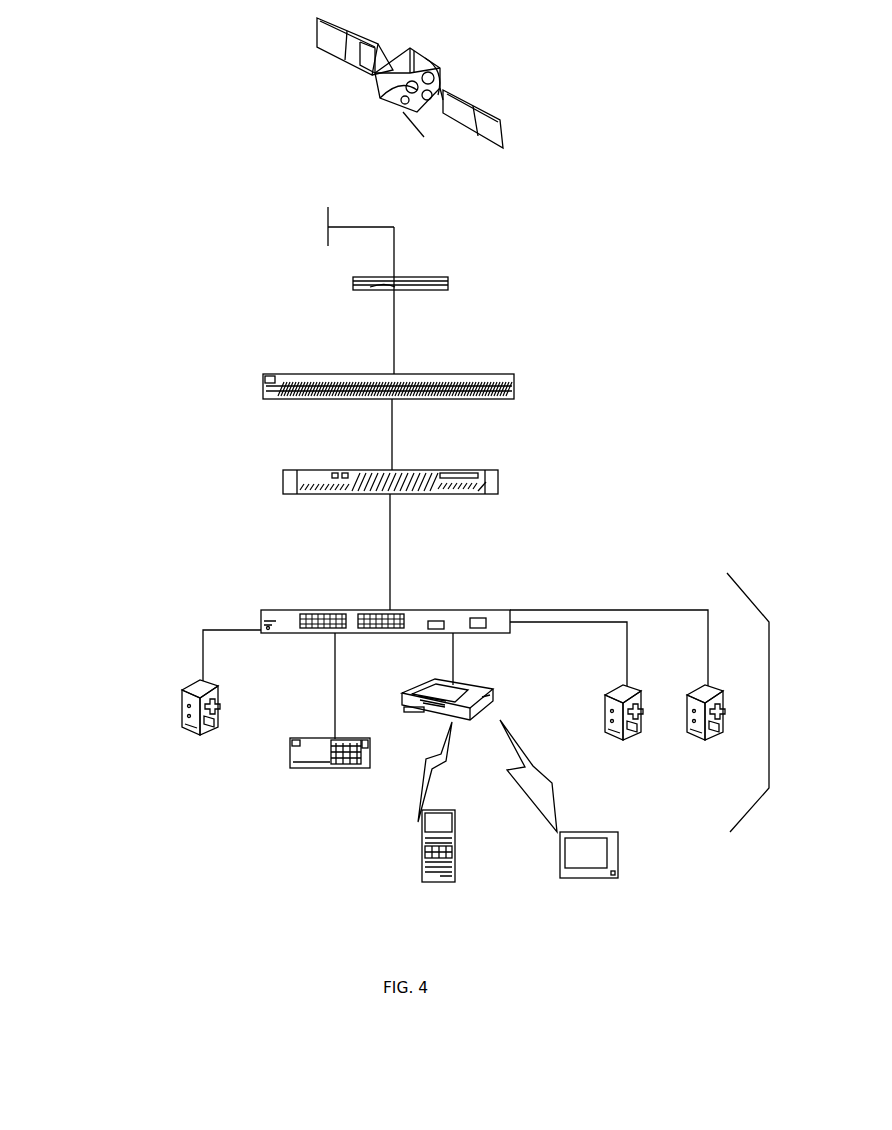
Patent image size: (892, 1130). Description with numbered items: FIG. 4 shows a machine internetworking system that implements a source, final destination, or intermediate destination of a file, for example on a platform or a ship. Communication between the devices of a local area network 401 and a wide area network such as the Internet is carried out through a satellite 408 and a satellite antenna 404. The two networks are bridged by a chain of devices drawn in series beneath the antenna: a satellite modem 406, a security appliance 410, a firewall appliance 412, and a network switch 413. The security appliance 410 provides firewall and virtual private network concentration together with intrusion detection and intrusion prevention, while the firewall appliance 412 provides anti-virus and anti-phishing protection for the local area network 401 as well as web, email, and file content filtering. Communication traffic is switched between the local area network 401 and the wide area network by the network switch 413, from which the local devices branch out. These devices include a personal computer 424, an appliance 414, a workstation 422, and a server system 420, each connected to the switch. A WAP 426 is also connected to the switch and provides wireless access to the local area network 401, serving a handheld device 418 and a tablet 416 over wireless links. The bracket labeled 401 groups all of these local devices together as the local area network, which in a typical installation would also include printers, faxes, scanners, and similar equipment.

The satellite 408 is at (412, 100).
The satellite antenna 404 is at (271, 226).
The satellite modem 406 is at (301, 284).
The security appliance 410 is at (286, 386).
The firewall appliance 412 is at (288, 482).
The network switch 413 is at (385, 591).
The personal computer 424 is at (210, 712).
The appliance 414 is at (337, 718).
The WAP 426 is at (482, 676).
The handheld device 418 is at (470, 820).
The tablet 416 is at (587, 817).
The workstation 422 is at (591, 689).
The server system 420 is at (631, 699).
The local area network 401 is at (778, 702).